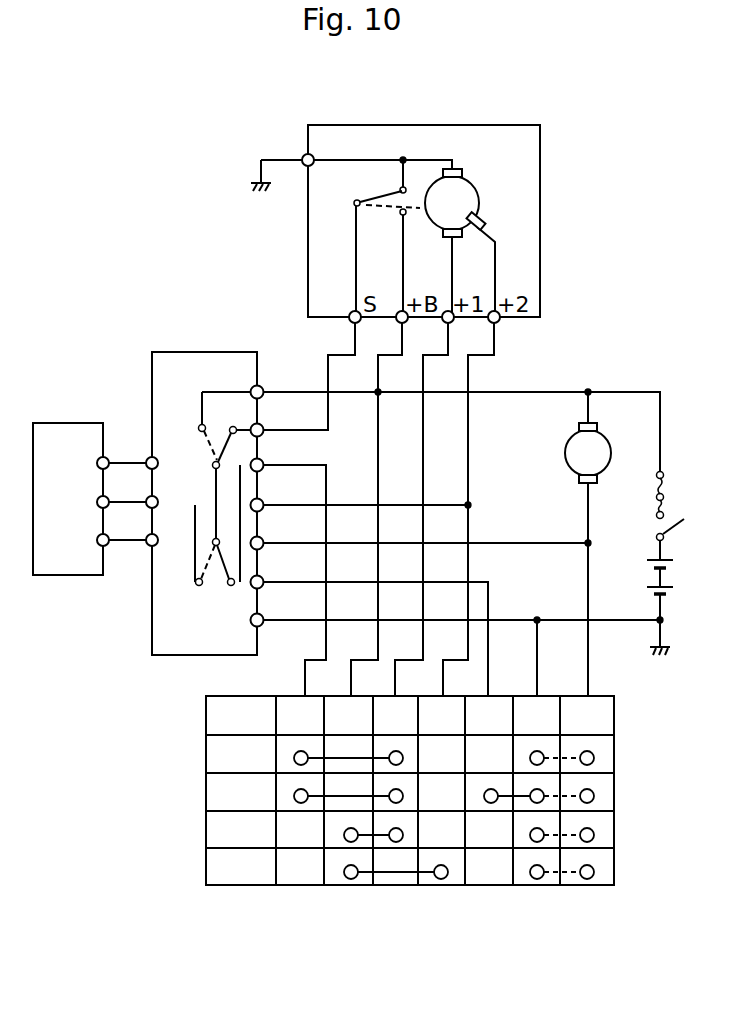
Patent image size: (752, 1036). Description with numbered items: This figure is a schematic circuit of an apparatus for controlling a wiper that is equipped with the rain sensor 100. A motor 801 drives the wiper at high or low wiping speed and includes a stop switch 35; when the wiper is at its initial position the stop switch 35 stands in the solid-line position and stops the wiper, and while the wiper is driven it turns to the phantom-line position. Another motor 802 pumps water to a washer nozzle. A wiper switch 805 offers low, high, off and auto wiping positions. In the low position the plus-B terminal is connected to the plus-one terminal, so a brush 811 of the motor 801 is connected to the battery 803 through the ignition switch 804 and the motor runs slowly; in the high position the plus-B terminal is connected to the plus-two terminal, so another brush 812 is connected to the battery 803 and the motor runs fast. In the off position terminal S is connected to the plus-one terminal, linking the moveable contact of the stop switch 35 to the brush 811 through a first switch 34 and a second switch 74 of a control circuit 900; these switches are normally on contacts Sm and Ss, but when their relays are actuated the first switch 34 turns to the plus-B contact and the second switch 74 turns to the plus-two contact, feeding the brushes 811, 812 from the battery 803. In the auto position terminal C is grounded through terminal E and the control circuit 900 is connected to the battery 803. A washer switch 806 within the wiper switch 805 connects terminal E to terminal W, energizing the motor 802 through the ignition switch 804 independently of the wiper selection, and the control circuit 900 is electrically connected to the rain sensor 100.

The rain sensor 100 is at (52, 423).
The control circuit 900 is at (207, 352).
The first switch 34 is at (201, 441).
The second switch 74 is at (214, 591).
The stop switch 35 is at (388, 218).
The motor 801 is at (476, 191).
The brush 811 is at (446, 236).
The brush 812 is at (481, 219).
The motor 802 is at (566, 457).
The battery 803 is at (653, 573).
The ignition switch 804 is at (657, 528).
The wiper switch 805 is at (201, 792).
The washer switch 806 is at (581, 893).